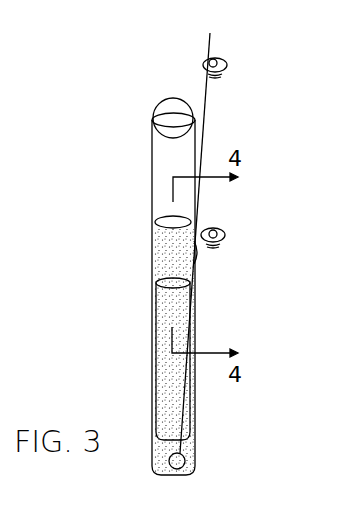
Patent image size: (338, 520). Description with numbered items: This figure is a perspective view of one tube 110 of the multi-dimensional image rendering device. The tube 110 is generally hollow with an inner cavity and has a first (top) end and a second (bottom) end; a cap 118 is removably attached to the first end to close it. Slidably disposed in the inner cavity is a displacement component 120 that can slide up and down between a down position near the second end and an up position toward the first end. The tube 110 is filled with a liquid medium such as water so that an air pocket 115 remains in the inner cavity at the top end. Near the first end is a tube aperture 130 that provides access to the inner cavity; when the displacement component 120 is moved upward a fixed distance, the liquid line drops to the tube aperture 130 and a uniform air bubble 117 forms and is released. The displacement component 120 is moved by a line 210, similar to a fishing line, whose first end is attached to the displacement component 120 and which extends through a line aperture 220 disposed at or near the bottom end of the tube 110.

The tube 110 is at (152, 262).
The air pocket 115 is at (162, 193).
The air bubble 117 is at (230, 62).
The cap 118 is at (163, 112).
The displacement component 120 is at (163, 312).
The tube aperture 130 is at (196, 258).
The line 210 is at (204, 110).
The line aperture 220 is at (185, 470).